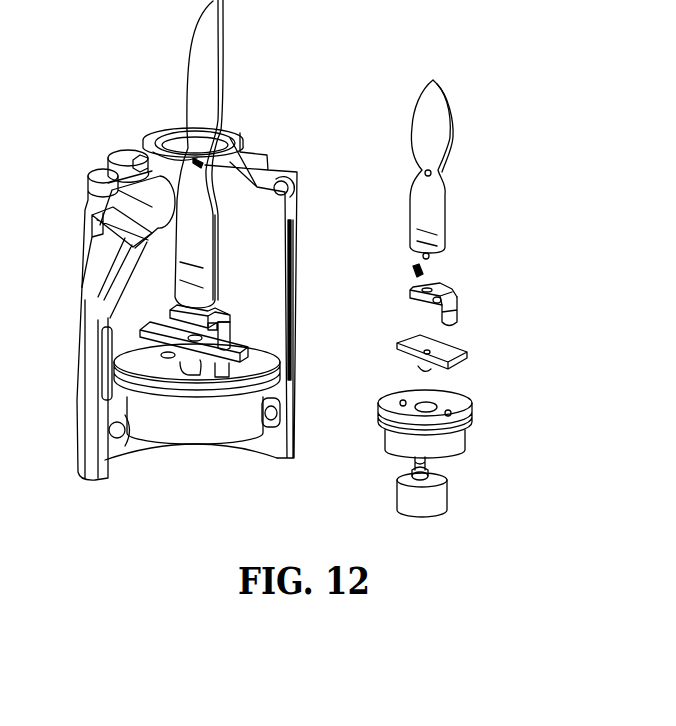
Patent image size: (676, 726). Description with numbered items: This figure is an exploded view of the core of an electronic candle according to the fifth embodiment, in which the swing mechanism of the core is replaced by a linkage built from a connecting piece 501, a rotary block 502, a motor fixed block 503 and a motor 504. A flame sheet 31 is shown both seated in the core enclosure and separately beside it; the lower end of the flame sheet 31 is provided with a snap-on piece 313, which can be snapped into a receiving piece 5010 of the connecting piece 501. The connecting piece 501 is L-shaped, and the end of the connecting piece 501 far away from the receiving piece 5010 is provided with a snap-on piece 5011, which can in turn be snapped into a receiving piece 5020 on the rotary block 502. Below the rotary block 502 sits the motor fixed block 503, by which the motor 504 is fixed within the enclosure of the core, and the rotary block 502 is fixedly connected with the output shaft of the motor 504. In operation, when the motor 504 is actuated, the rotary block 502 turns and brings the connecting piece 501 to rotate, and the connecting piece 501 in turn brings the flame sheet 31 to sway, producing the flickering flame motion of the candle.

The flame sheet 31 is at (218, 298).
The snap-on piece 313 is at (415, 271).
The connecting piece 501 is at (360, 291).
The receiving piece 5010 is at (440, 291).
The snap-on piece 5011 is at (462, 313).
The rotary block 502 is at (338, 339).
The receiving piece 5020 is at (457, 351).
The motor fixed block 503 is at (378, 403).
The motor 504 is at (235, 448).